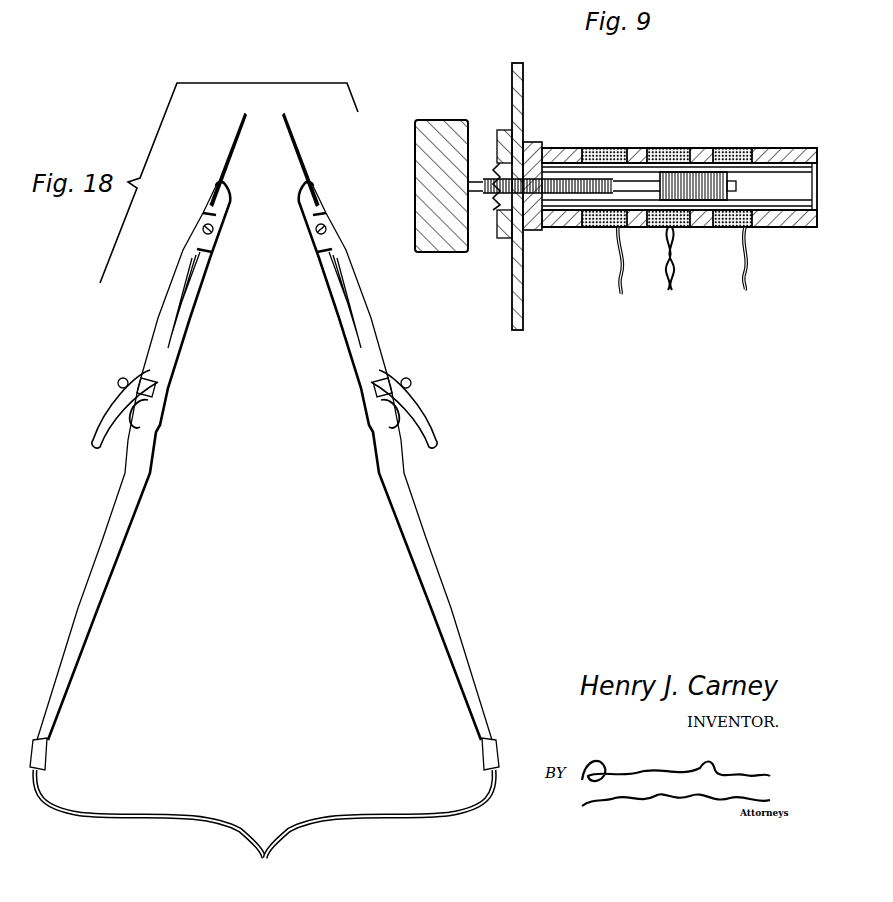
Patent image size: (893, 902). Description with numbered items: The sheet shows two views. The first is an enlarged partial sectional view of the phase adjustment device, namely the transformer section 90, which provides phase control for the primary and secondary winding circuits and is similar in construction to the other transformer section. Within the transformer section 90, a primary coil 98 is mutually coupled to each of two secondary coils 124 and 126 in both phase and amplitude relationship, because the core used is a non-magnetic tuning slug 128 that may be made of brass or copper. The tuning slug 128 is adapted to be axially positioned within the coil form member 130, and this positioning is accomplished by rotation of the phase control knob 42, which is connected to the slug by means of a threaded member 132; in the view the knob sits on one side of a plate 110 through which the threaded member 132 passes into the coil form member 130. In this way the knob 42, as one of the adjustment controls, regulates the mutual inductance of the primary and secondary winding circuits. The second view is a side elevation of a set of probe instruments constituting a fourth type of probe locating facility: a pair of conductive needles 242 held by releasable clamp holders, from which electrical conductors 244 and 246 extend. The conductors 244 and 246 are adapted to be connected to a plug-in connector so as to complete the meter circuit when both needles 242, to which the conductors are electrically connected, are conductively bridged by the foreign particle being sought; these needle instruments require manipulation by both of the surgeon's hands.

In FIG. 9, the phase control knob 42 is at (431, 116).
In FIG. 9, the mounting plate 110 is at (512, 88).
In FIG. 9, the transformer section 90 is at (594, 113).
In FIG. 9, the coil form member 130 is at (553, 146).
In FIG. 9, the secondary coil 124 is at (620, 138).
In FIG. 9, the primary coil 98 is at (661, 150).
In FIG. 9, the secondary coil 126 is at (726, 150).
In FIG. 9, the threaded member 132 is at (573, 198).
In FIG. 9, the tuning slug 128 is at (708, 200).
In FIG. 18, the conductive needles 242 is at (229, 157).
In FIG. 18, the electrical conductor 244 is at (127, 815).
In FIG. 18, the electrical conductor 246 is at (334, 815).